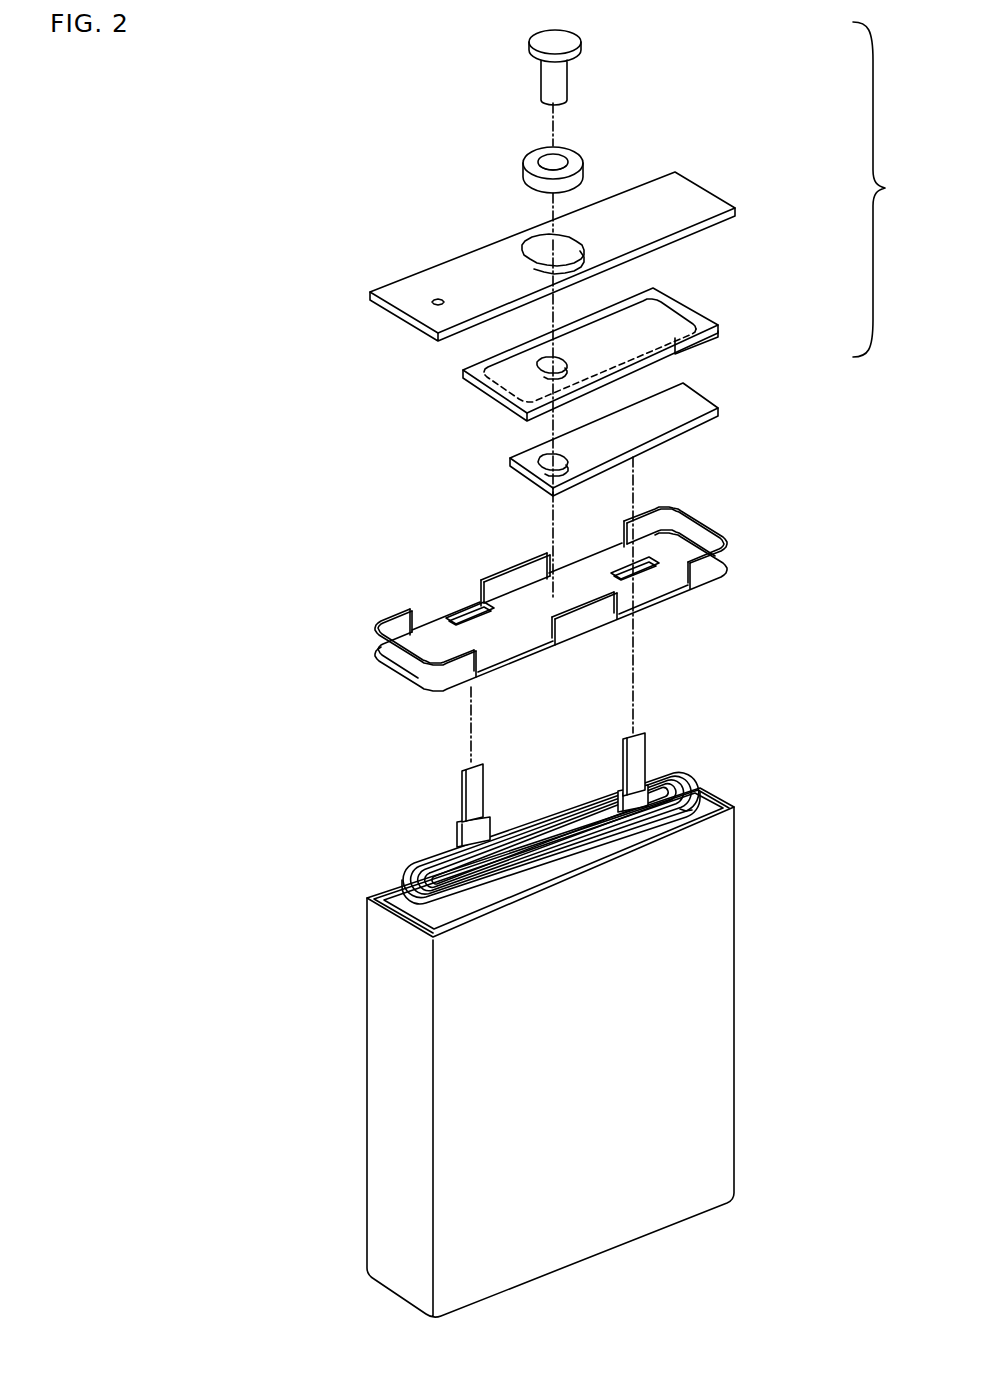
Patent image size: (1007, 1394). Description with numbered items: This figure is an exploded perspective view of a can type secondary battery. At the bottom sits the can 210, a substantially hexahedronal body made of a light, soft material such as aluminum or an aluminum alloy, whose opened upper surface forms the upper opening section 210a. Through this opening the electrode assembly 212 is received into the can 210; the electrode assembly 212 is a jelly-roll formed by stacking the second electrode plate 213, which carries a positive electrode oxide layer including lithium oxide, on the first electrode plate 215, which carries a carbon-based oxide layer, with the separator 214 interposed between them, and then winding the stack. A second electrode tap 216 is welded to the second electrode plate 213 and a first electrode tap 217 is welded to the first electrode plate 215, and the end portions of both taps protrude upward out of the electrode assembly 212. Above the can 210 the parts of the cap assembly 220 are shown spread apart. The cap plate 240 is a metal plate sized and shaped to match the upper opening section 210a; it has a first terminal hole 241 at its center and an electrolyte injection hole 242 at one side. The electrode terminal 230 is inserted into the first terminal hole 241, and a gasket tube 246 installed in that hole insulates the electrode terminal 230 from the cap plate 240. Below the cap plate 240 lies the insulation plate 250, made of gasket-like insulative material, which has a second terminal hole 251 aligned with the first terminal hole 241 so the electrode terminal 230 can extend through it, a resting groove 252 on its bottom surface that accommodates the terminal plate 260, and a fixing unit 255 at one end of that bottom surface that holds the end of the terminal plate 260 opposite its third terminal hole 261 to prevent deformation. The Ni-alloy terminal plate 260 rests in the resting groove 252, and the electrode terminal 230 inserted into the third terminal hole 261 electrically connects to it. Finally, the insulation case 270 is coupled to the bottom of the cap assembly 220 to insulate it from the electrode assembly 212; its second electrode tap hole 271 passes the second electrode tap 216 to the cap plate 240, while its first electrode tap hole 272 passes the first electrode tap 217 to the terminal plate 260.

The can 210 is at (612, 1046).
The upper opening section 210a is at (710, 808).
The electrode assembly 212 is at (565, 793).
The second electrode plate 213 is at (695, 778).
The separator 214 is at (690, 777).
The first electrode plate 215 is at (668, 770).
The second electrode tap 216 is at (473, 793).
The first electrode tap 217 is at (633, 758).
The cap assembly 220 is at (893, 189).
The electrode terminal 230 is at (567, 40).
The cap plate 240 is at (596, 246).
The first terminal hole 241 is at (545, 257).
The electrolyte injection hole 242 is at (438, 298).
The gasket tube 246 is at (532, 160).
The insulation plate 250 is at (605, 349).
The second terminal hole 251 is at (535, 370).
The resting groove 252 is at (473, 363).
The fixing unit 255 is at (712, 338).
The terminal plate 260 is at (631, 448).
The third terminal hole 261 is at (530, 468).
The insulation case 270 is at (551, 599).
The second electrode tap hole 271 is at (463, 610).
The first electrode tap hole 272 is at (693, 561).